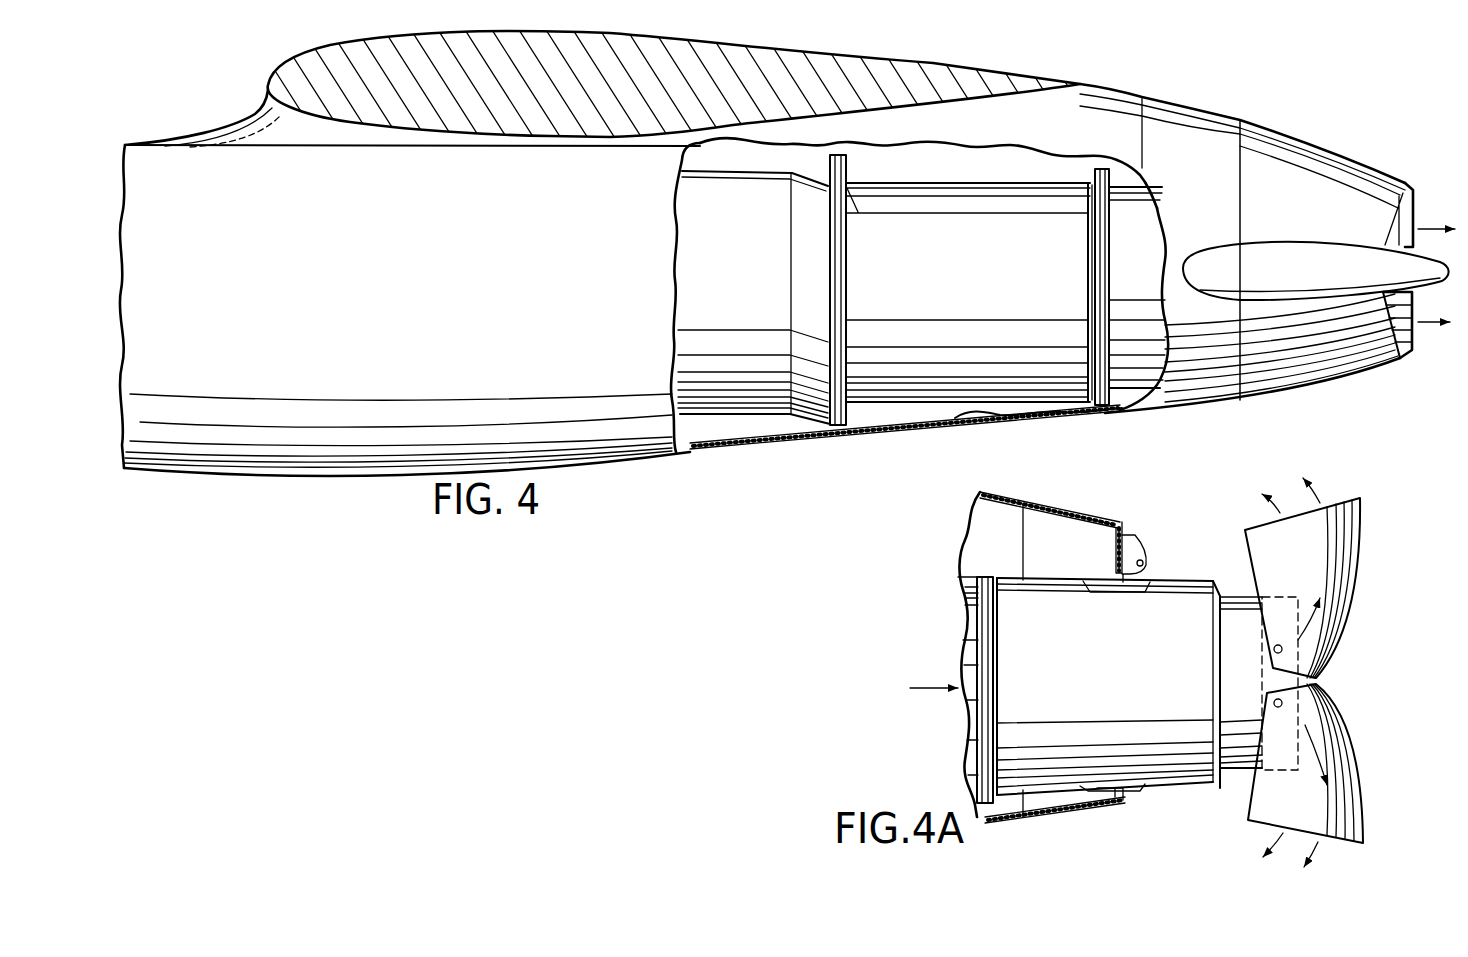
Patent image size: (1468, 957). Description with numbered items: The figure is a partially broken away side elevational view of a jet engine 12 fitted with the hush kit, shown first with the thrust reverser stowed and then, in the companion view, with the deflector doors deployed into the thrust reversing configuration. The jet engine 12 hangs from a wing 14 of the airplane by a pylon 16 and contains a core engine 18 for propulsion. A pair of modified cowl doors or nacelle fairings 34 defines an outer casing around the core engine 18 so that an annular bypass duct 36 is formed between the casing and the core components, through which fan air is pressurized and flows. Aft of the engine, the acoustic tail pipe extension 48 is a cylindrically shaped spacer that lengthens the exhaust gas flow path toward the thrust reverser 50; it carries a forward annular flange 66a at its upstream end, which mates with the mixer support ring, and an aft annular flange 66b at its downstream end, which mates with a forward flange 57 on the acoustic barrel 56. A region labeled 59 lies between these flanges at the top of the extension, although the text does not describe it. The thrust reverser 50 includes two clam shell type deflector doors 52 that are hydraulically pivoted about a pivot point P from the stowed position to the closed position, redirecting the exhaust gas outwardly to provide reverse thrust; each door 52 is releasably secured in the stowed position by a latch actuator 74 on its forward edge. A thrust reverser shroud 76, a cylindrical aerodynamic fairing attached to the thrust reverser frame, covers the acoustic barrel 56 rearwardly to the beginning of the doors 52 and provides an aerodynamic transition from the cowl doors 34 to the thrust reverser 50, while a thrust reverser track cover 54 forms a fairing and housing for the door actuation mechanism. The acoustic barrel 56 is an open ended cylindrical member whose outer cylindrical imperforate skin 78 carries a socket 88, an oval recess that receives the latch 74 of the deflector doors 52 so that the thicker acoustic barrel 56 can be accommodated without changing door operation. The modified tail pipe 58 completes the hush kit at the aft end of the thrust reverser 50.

In FIG. 4, the jet engine 12 is at (639, 494).
In FIG. 4, the wing 14 is at (520, 128).
In FIG. 4, the pylon 16 is at (281, 136).
In FIG. 4, the core engine 18 is at (733, 422).
In FIG. 4, the cowl doors or nacelle fairings 34 is at (516, 304).
In FIG. 4A, the annular bypass duct 36 is at (930, 690).
In FIG. 4, the acoustic tail pipe extension 48 is at (972, 297).
In FIG. 4A, the acoustic tail pipe extension 48 is at (967, 635).
In FIG. 4, the thrust reverser 50 is at (1273, 117).
In FIG. 4A, the thrust reverser 50 is at (1370, 512).
In FIG. 4, the deflector doors 52 is at (1307, 140).
In FIG. 4A, the deflector doors 52 is at (1360, 537).
In FIG. 4, the thrust reverser track cover 54 is at (1297, 247).
In FIG. 4, the acoustic barrel 56 is at (1133, 181).
In FIG. 4A, the acoustic barrel 56 is at (1120, 693).
In FIG. 4, the forward flange 57 is at (1117, 410).
In FIG. 4A, the forward flange 57 is at (990, 575).
In FIG. 4, the modified tail pipe 58 is at (1405, 302).
In FIG. 4A, the modified tail pipe 58 is at (1258, 681).
In FIG. 4, the gap 59 is at (837, 162).
In FIG. 4, the forward annular flange 66a is at (850, 160).
In FIG. 4, the aft annular flange 66b is at (1098, 149).
In FIG. 4A, the aft annular flange 66b is at (960, 577).
In FIG. 4A, the latch actuator 74 is at (1138, 545).
In FIG. 4, the thrust reverser shroud 76 is at (1183, 412).
In FIG. 4A, the thrust reverser shroud 76 is at (1043, 502).
In FIG. 4, the outer cylindrical imperforate skin 78 is at (1128, 265).
In FIG. 4A, the outer cylindrical imperforate skin 78 is at (1182, 770).
In FIG. 4A, the socket 88 is at (1107, 592).
In FIG. 4, the pivot point P is at (1362, 236).
In FIG. 4A, the pivot point P is at (1275, 699).